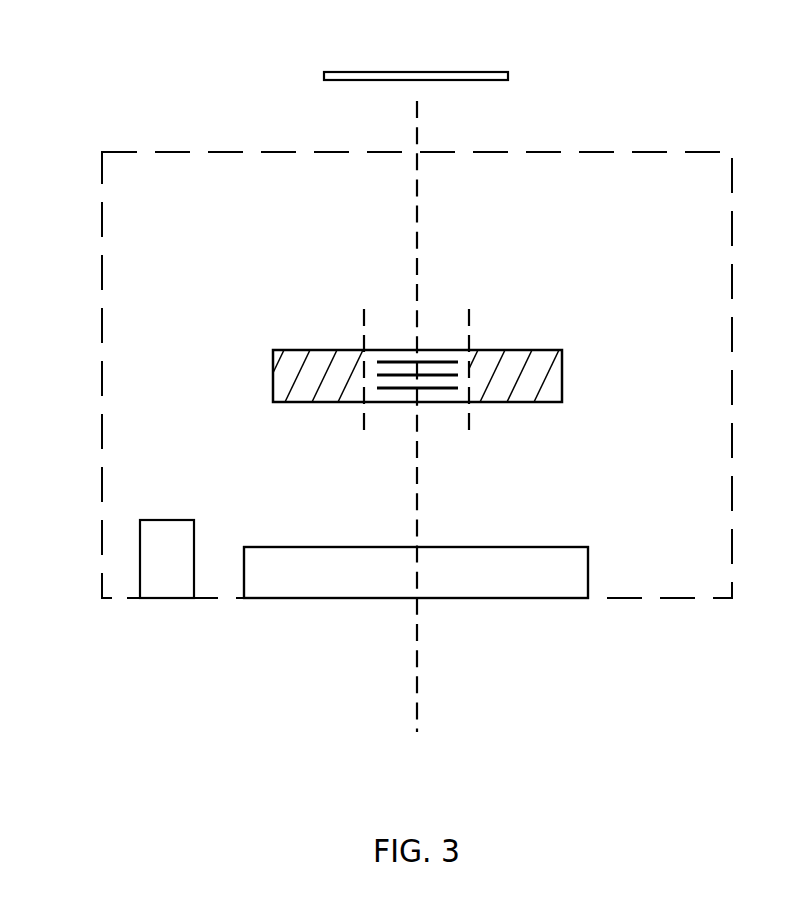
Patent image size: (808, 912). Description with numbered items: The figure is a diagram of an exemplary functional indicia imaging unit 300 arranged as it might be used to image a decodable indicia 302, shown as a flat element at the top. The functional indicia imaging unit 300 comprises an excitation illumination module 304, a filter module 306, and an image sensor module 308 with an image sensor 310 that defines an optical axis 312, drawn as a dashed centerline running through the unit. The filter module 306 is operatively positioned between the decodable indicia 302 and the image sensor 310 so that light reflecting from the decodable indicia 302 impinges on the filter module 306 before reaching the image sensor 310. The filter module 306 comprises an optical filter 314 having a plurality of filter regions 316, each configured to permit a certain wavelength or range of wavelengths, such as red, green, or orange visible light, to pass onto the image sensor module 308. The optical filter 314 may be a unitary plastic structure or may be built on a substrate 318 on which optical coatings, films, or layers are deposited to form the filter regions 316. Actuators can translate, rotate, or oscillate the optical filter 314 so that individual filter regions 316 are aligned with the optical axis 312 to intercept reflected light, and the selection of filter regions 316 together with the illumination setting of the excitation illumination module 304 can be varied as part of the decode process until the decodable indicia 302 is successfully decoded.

The functional indicia imaging unit 300 is at (688, 195).
The decodable indicia 302 is at (497, 70).
The excitation illumination module 304 is at (133, 513).
The filter module 306 is at (568, 375).
The image sensor module 308 is at (582, 522).
The image sensor 310 is at (588, 573).
The optical axis 312 is at (416, 660).
The optical filter 314 is at (272, 355).
The filter regions 316 is at (513, 325).
The substrate 318 is at (300, 392).